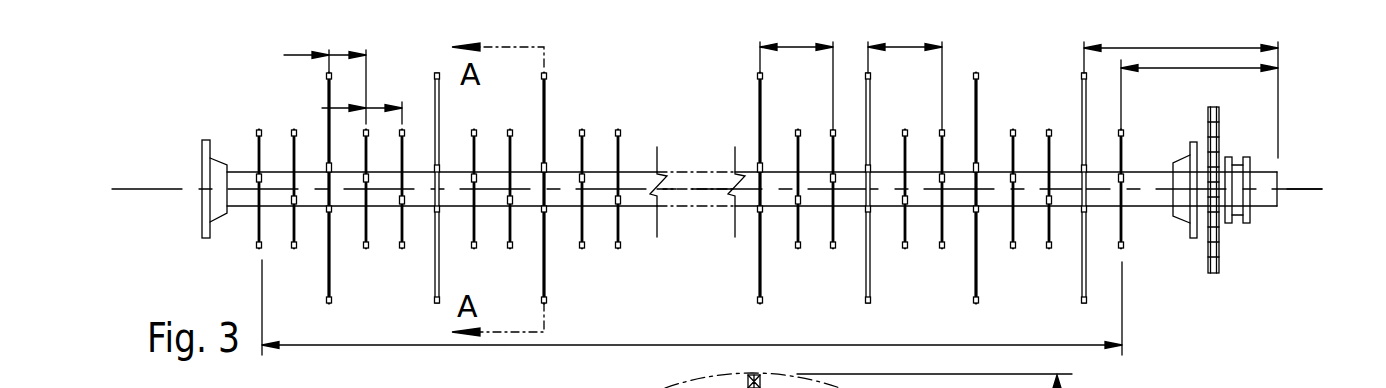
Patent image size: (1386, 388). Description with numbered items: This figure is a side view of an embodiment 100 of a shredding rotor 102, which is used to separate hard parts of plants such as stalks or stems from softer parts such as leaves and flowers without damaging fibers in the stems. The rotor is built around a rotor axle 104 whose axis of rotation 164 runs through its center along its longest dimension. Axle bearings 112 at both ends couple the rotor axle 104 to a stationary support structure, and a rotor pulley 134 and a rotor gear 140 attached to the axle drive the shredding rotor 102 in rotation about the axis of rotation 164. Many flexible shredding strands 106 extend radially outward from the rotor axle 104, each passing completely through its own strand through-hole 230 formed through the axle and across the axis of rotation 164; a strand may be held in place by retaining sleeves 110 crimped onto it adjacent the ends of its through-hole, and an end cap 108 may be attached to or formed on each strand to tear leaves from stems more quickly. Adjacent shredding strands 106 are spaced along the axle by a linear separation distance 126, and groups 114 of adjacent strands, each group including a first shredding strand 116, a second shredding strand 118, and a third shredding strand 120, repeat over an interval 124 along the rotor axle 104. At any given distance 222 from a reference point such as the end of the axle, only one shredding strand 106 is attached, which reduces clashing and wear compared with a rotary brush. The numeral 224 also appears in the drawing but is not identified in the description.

The embodiment of a shredding rotor 100 is at (216, 98).
The shredding rotor 102 is at (668, 68).
The rotor axle 104 is at (630, 172).
The shredding strands 106 is at (619, 231).
The end cap 108 is at (1083, 305).
The retaining sleeves 110 is at (1068, 228).
The axle bearings 112 is at (207, 238).
The groups of adjacent shredding strands 114 is at (800, 45).
The first shredding strand 116 is at (758, 287).
The second shredding strand 118 is at (797, 228).
The third shredding strand 120 is at (832, 230).
The interval 124 is at (683, 344).
The linear separation distance 126 is at (322, 85).
The rotor pulley 134 is at (1279, 207).
The rotor gear 140 is at (1212, 275).
The axis of rotation 164 is at (1298, 187).
The distance of shredding strand from reference point 222 is at (1216, 47).
The bearing collar 224 is at (1278, 199).
The strand through-hole 230 is at (329, 192).